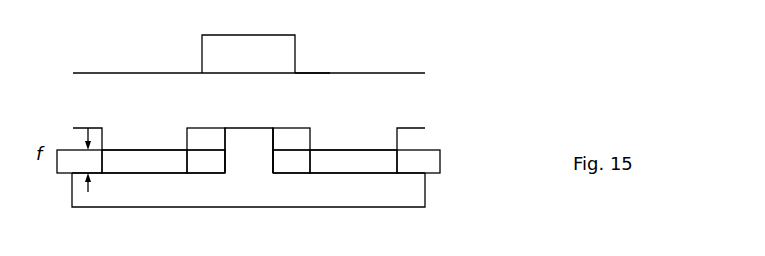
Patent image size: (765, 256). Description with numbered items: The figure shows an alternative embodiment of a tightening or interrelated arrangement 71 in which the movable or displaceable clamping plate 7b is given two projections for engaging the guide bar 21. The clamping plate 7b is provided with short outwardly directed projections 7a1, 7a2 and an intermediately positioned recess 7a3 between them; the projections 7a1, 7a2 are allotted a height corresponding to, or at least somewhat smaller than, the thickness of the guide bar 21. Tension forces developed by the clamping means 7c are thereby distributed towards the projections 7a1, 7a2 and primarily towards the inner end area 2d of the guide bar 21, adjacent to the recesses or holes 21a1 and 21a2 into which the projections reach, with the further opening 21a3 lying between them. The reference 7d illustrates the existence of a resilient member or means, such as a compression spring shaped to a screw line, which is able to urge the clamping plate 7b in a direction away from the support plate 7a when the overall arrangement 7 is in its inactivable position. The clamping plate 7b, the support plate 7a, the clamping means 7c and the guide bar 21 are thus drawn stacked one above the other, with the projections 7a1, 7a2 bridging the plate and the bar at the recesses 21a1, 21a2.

The arrangement 7 is at (382, 62).
The clamping means 7c is at (203, 57).
The tightening or interrelated arrangement 71 is at (313, 62).
The support plate 7a is at (177, 202).
The recess or hole 21a1 is at (144, 161).
The projection 7a2 is at (148, 149).
The recess 7a3 is at (223, 115).
The resilient member 7d is at (249, 150).
The guide bar 21 is at (296, 167).
The recess or hole 21a2 is at (353, 161).
The projection 7a1 is at (353, 149).
The clamping plate 7b is at (401, 118).
The inner end area of the guide bar 2d is at (451, 162).
The third sub-element 21a3 is at (270, 160).